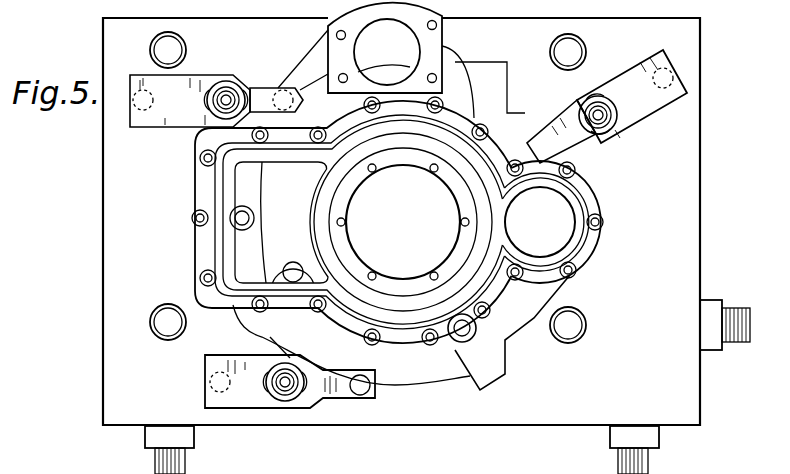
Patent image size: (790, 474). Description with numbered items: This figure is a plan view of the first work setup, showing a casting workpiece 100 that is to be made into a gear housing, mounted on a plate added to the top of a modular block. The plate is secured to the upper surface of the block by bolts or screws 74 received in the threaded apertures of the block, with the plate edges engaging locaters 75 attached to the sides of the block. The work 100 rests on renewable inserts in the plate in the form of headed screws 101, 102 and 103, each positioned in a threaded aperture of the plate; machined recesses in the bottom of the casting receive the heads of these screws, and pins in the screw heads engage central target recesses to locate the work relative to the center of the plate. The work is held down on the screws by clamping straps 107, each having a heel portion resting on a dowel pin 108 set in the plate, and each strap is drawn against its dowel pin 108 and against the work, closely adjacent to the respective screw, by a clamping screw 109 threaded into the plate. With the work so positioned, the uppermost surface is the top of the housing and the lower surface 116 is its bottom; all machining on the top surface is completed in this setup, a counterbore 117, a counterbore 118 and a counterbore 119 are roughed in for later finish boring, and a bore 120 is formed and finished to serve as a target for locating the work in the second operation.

The bolts or screws 74 is at (186, 49).
The locaters 75 is at (712, 300).
The workpiece 100 is at (594, 206).
The headed screw 101 is at (571, 186).
The headed screw 102 is at (377, 398).
The headed screw 103 is at (274, 86).
The clamping strap 107 is at (646, 112).
The dowel pin 108 is at (674, 78).
The clamping screw 109 is at (606, 122).
The lower surface 116 is at (541, 472).
The counterbore 117 is at (333, 243).
The counterbore 118 is at (372, 299).
The counterbore 119 is at (472, 278).
The bore 120 is at (477, 326).